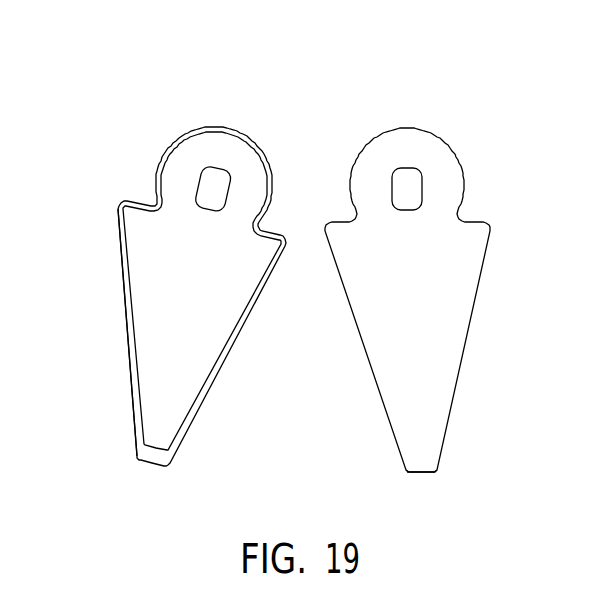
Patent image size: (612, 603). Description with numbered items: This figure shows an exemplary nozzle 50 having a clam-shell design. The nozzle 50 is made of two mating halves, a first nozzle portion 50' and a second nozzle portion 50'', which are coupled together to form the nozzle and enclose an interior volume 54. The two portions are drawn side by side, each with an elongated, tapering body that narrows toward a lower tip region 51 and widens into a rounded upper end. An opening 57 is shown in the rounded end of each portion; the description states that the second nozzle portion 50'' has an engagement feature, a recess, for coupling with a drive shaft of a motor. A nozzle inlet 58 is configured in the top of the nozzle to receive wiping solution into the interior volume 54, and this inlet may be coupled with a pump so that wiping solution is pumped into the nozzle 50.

The nozzle 50 is at (155, 50).
The first nozzle portion 50' is at (180, 280).
The second nozzle portion 50'' is at (407, 265).
The tip end of clip 51 is at (428, 473).
The interior volume 54 is at (145, 280).
The aperture 57 is at (407, 196).
The nozzle inlet 58 is at (233, 128).